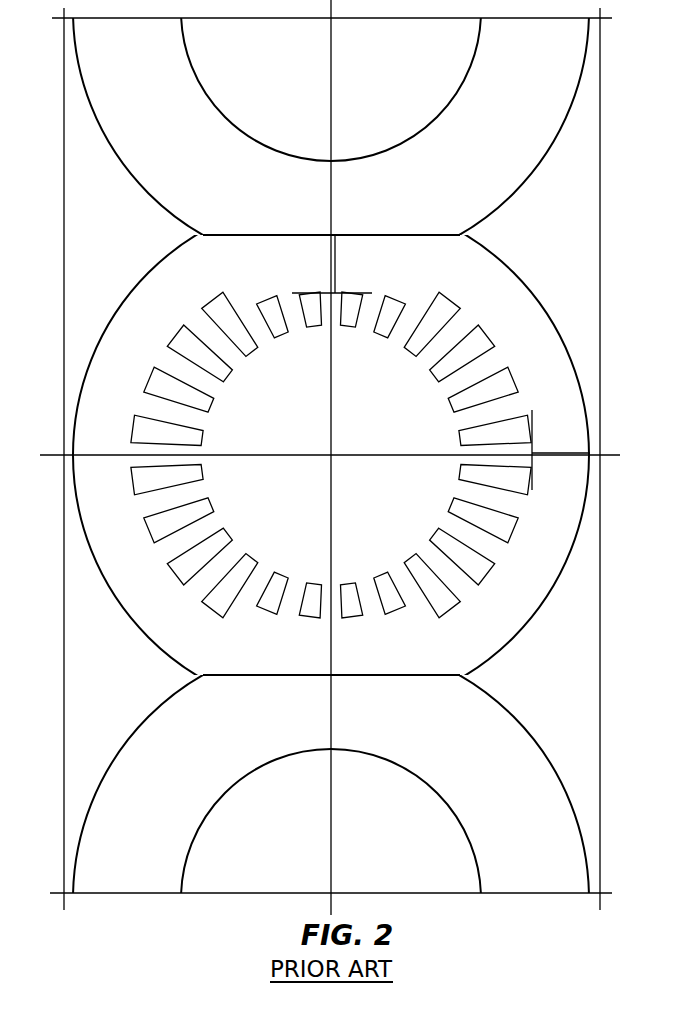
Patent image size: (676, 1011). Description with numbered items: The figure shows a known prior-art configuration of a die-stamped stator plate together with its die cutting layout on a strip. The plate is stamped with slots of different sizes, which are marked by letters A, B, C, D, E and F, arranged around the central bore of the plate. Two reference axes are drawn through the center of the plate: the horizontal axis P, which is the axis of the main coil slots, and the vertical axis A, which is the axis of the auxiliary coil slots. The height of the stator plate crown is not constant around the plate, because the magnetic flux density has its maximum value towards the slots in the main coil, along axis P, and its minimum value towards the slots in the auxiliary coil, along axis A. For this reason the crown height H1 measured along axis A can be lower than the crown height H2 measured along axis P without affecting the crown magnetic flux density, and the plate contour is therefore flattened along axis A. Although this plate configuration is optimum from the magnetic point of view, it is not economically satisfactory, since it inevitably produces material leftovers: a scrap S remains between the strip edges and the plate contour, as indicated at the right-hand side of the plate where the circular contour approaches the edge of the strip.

The auxiliary coil axis A is at (331, 457).
The slots B is at (331, 455).
The slots C is at (330, 455).
The slots D is at (331, 455).
The slots E is at (331, 455).
The slots F is at (330, 455).
The crown height of axis AA H1 is at (336, 252).
The crown height of axis PP H2 is at (548, 452).
The main coil axis P is at (324, 455).
The scrap S is at (594, 460).